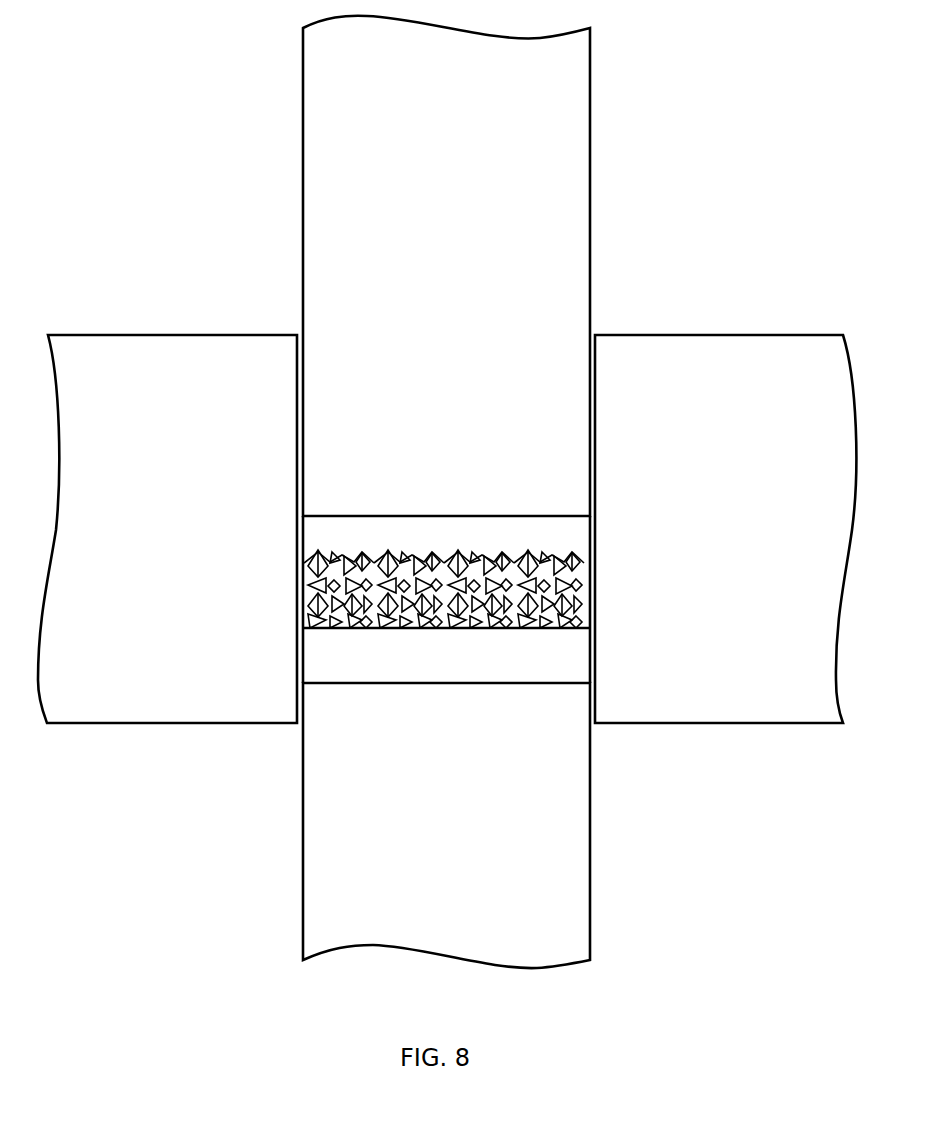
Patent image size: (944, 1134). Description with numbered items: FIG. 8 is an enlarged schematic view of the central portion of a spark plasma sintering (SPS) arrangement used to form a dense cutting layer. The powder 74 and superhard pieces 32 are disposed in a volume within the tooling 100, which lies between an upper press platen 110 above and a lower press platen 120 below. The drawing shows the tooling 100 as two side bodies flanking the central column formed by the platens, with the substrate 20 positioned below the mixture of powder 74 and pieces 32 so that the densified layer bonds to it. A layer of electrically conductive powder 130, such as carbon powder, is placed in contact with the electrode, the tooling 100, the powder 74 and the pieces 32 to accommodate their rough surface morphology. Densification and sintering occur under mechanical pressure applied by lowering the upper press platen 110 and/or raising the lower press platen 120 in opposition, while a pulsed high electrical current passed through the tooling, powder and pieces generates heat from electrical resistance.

The upper press platen 110 is at (573, 107).
The lower press platen 120 is at (573, 862).
The tooling 100 is at (180, 348).
The electrically conductive powder 130 is at (517, 530).
The powder 74 is at (310, 592).
The substrate 20 is at (348, 655).
The superhard pieces 32 is at (580, 620).